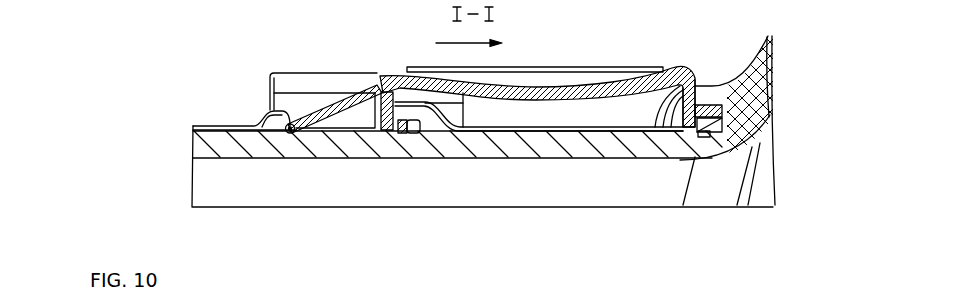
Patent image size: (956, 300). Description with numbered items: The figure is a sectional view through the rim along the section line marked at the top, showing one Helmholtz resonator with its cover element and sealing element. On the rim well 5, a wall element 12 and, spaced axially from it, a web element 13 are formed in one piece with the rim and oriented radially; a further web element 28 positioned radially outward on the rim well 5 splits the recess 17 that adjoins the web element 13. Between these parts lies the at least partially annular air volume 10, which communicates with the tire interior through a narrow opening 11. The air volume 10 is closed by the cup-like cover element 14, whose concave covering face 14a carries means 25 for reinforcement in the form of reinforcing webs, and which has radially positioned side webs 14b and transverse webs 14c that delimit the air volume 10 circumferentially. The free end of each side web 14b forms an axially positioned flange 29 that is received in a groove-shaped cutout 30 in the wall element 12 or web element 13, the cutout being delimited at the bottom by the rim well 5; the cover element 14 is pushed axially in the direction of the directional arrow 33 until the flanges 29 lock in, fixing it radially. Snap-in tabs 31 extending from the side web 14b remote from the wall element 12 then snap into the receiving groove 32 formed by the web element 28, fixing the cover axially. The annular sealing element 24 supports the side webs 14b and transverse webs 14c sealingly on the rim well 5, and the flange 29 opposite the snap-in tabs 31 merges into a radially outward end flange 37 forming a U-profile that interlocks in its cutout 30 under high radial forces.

The rim well 5 is at (646, 120).
The air volume 10 is at (547, 130).
The opening 11 is at (262, 81).
The wall element 12 is at (723, 97).
The web element 13 is at (418, 133).
The cover element 14 is at (526, 65).
The covering face 14a is at (410, 86).
The side webs 14b is at (387, 106).
The transverse webs 14c is at (571, 113).
The recess 17 is at (190, 119).
The sealing element 24 is at (415, 129).
The means for reinforcement 25 is at (527, 78).
The web element 28 is at (276, 123).
The axially positioned flange 29 is at (431, 124).
The groove-shaped cutout 30 is at (385, 135).
The snap-in tabs 31 is at (319, 103).
The receiving groove 32 is at (288, 129).
The directional arrow 33 is at (455, 43).
The end flange 37 is at (723, 107).